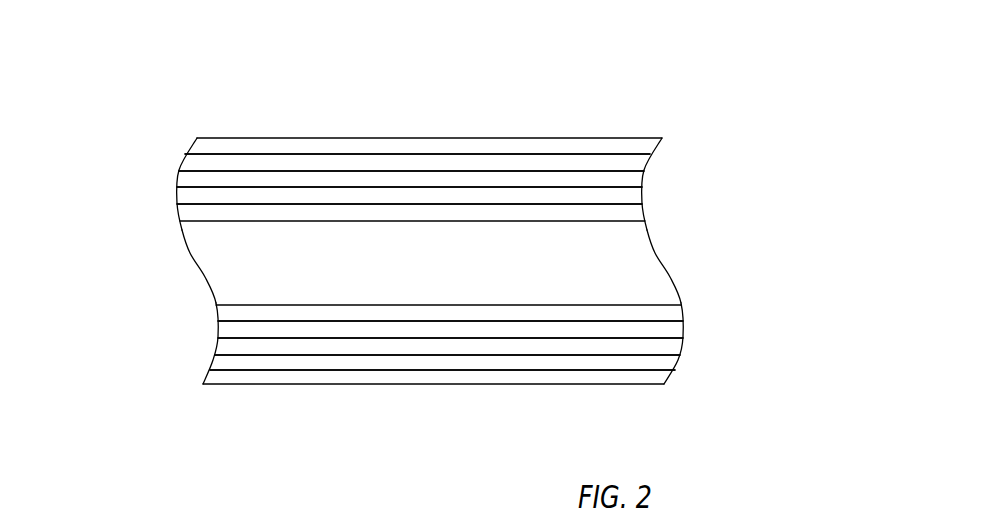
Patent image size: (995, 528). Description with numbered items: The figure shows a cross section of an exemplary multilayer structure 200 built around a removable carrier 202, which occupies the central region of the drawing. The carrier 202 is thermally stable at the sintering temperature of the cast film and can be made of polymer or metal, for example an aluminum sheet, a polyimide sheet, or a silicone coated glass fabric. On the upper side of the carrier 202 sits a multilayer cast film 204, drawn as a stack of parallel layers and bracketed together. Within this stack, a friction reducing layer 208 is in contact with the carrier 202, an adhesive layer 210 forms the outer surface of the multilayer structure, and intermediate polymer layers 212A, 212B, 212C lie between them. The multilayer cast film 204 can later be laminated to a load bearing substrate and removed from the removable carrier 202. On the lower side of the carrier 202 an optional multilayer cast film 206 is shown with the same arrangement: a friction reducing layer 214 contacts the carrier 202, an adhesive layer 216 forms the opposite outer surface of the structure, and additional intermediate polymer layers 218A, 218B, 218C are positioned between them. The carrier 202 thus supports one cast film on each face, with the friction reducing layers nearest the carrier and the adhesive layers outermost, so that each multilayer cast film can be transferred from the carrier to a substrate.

The multilayer structure 200 is at (627, 108).
The removable carrier 202 is at (647, 277).
The multilayer cast film 204 is at (678, 137).
The multilayer cast film 206 is at (705, 302).
The friction reducing layer 208 is at (202, 208).
The adhesive layer 210 is at (212, 143).
The intermediate polymer layer 212A is at (203, 193).
The intermediate polymer layer 212B is at (210, 181).
The intermediate polymer layer 212C is at (215, 162).
The friction reducing layer 214 is at (230, 312).
The adhesive layer 216 is at (220, 377).
The additional intermediate polymer layer 218A is at (237, 329).
The additional intermediate polymer layer 218B is at (230, 349).
The additional intermediate polymer layer 218C is at (222, 361).